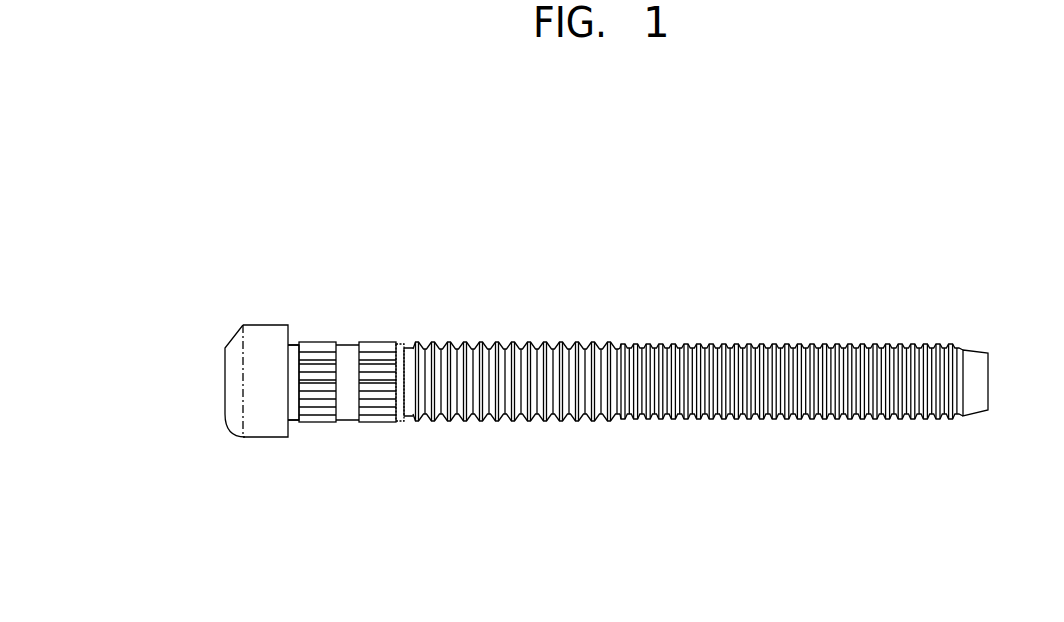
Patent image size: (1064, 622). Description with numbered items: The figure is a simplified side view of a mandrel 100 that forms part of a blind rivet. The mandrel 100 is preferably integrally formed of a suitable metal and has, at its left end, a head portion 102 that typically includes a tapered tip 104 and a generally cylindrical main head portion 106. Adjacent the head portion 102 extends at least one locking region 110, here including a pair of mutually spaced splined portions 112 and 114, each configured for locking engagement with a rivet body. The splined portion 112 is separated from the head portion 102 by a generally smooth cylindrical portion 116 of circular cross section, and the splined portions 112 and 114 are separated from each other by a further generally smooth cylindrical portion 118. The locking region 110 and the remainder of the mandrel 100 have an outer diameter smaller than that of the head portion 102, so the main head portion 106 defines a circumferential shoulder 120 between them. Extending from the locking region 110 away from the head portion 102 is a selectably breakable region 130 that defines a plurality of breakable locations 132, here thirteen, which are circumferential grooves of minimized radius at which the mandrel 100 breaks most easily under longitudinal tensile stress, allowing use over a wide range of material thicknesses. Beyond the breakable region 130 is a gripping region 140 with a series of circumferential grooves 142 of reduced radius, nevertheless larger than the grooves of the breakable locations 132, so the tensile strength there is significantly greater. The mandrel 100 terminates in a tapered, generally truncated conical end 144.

The mandrel 100 is at (430, 283).
The head portion 102 is at (242, 295).
The tapered tip 104 is at (235, 366).
The generally cylindrical main head portion 106 is at (268, 338).
The locking region 110 is at (354, 466).
The splined portion 112 is at (310, 338).
The splined portion 114 is at (378, 337).
The generally smooth cylindrical portion 116 is at (295, 418).
The generally smooth cylindrical portion 118 is at (350, 415).
The circumferential shoulder 120 is at (290, 335).
The selectably breakable region 130 is at (563, 313).
The breakable locations 132 is at (470, 420).
The gripping region 140 is at (816, 299).
The circumferential grooves 142 is at (722, 418).
The tapered, generally truncated conical end 144 is at (977, 357).